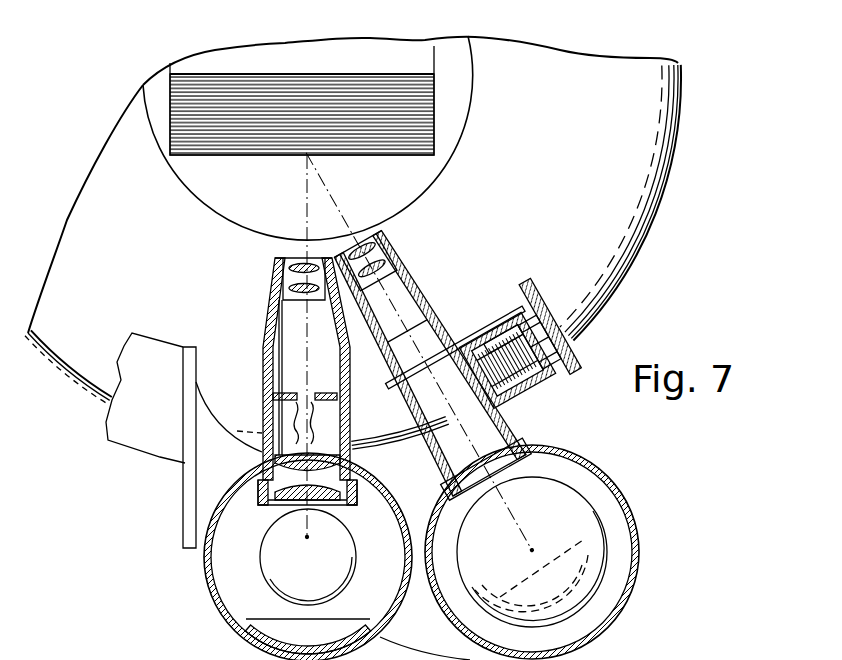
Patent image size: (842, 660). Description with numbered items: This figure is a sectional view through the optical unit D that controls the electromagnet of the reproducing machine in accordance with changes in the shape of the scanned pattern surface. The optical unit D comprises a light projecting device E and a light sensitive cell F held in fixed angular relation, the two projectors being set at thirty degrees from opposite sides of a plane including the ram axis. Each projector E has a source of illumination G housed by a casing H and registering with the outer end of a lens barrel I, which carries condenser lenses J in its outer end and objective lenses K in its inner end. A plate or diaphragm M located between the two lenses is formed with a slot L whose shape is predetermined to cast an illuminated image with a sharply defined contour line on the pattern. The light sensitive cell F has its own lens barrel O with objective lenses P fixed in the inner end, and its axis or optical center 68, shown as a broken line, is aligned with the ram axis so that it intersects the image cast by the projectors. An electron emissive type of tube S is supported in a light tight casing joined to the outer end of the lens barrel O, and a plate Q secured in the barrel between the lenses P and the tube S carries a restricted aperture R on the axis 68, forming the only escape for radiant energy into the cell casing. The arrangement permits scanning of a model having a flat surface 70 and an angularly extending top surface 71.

The flat surface 70 is at (432, 152).
The top angularly extending surface 71 is at (425, 133).
The light projecting device E is at (262, 345).
The lens barrel I is at (263, 380).
The objective lenses K is at (290, 286).
The plate or diaphragm M is at (322, 397).
The slot L is at (314, 424).
The condenser lenses J is at (314, 462).
The light sensitive cell F is at (424, 281).
The objective lenses P is at (377, 249).
The restricted aperture R is at (436, 378).
The optical unit D is at (445, 284).
The lens barrel O is at (446, 318).
The plate Q is at (452, 338).
The axis or optical center 68 is at (515, 432).
The source of illumination G is at (206, 581).
The casing H is at (216, 604).
The electron emissive type of tube S is at (567, 497).